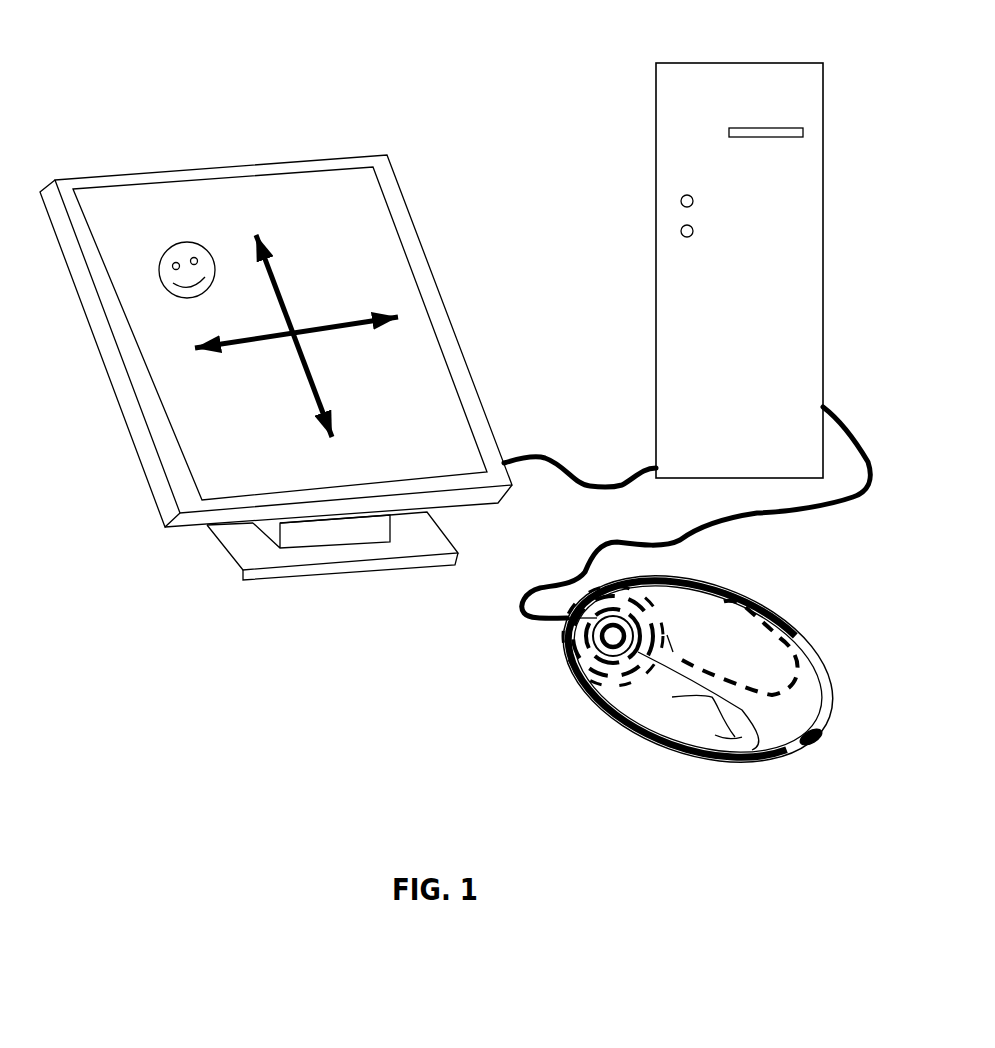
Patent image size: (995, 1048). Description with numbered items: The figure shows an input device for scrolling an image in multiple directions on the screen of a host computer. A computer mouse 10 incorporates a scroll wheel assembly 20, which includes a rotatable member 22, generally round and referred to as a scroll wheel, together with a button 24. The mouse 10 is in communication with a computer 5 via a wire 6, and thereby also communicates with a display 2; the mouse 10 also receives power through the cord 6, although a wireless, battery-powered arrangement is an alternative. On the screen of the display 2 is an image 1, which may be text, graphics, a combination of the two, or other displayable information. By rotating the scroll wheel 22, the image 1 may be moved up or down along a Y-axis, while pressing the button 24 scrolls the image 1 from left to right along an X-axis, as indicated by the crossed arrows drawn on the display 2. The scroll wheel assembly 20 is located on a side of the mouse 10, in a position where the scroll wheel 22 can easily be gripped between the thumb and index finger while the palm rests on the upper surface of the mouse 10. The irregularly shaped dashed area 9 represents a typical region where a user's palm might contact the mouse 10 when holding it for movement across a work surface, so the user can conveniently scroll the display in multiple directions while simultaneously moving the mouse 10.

The image 1 is at (162, 247).
The display 2 is at (262, 155).
The computer 5 is at (665, 110).
The wire 6 is at (518, 607).
The irregularly shaped dashed area 9 is at (738, 648).
The computer mouse 10 is at (802, 710).
The scroll wheel assembly 20 is at (635, 672).
The rotatable member 22 is at (612, 650).
The button 24 is at (567, 657).